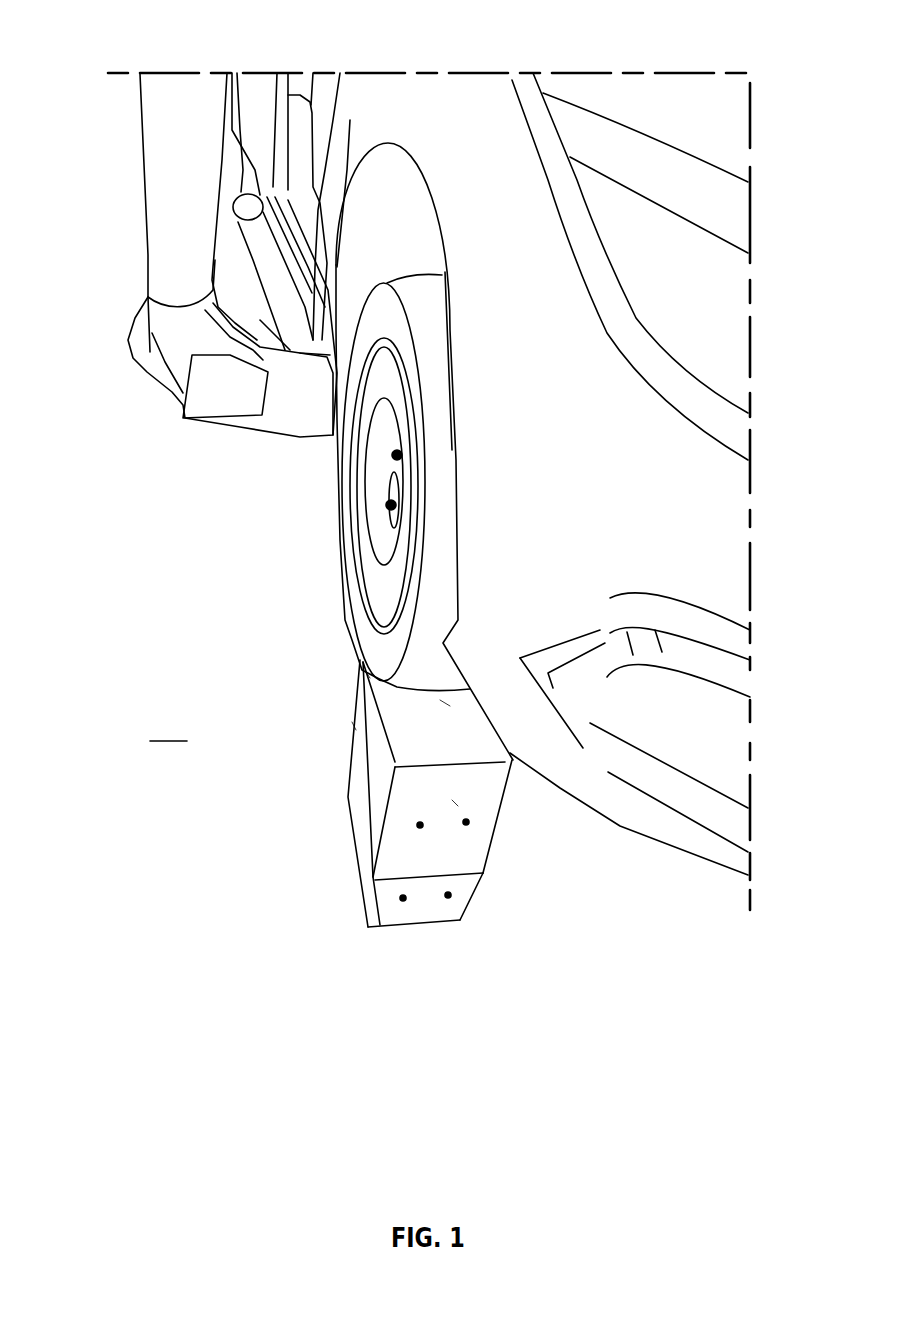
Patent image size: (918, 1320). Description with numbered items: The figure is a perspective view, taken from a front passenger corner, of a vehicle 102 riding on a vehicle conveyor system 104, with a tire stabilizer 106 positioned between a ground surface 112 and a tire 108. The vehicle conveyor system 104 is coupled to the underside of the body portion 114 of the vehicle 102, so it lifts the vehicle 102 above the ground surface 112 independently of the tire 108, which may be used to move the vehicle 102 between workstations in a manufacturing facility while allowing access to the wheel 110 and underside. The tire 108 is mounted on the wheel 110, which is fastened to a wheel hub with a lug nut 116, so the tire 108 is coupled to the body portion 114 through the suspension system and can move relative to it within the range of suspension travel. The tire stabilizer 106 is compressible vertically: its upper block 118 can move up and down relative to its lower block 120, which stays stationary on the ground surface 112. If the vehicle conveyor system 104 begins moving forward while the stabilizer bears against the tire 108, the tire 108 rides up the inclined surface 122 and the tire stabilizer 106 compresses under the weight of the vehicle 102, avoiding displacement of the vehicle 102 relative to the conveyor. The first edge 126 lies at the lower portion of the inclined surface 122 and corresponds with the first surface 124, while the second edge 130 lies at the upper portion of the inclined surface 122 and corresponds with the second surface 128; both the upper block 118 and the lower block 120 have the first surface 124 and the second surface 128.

The vehicle 102 is at (620, 457).
The vehicle conveyor system 104 is at (178, 345).
The tire stabilizer 106 is at (362, 798).
The tire 108 is at (425, 318).
The wheel 110 is at (382, 380).
The ground surface 112 is at (168, 726).
The body portion 114 is at (397, 117).
The lug nut 116 is at (400, 458).
The upper block 118 is at (487, 783).
The lower block 120 is at (387, 910).
The inclined surface 122 is at (435, 717).
The first surface 124 is at (353, 720).
The first edge 126 is at (368, 673).
The second surface 128 is at (428, 913).
The second edge 130 is at (460, 762).